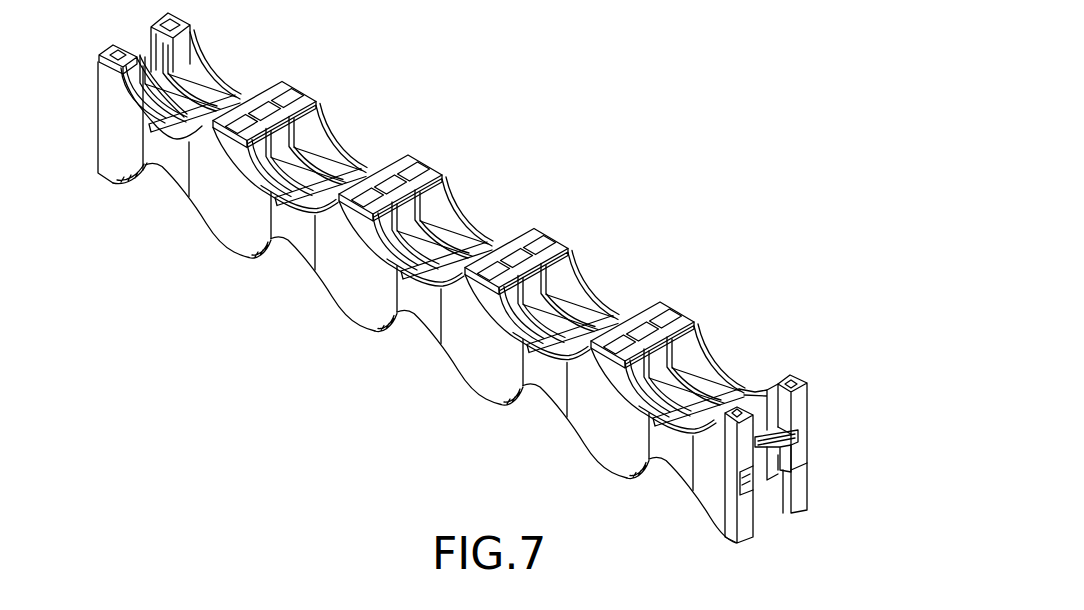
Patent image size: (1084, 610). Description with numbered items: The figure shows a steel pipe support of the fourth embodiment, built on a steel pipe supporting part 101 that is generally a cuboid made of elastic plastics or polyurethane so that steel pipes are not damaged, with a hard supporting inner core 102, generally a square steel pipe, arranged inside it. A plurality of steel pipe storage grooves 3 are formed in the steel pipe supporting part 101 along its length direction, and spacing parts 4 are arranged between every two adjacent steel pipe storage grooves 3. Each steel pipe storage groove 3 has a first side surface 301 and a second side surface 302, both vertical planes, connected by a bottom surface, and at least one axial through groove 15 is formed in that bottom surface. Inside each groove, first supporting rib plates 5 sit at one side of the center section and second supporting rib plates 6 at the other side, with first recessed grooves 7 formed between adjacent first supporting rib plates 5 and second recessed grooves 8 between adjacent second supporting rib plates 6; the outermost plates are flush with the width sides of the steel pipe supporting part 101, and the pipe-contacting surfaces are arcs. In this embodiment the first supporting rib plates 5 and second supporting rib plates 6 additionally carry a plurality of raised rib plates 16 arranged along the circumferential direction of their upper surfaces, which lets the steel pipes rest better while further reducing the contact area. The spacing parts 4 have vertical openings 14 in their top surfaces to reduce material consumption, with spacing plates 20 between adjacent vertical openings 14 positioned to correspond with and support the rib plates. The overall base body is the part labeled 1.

The base 1 is at (237, 228).
The steel pipe storage groove 3 is at (610, 264).
The spacing part 4 is at (532, 229).
The first supporting rib plate 5 is at (350, 107).
The second supporting rib plate 6 is at (362, 143).
The first recessed groove 7 is at (705, 346).
The second recessed groove 8 is at (755, 395).
The vertical opening 14 is at (221, 178).
The axial through groove 15 is at (433, 310).
The raised rib plate 16 is at (481, 195).
The spacing plate 20 is at (265, 79).
The steel pipe supporting part 101 is at (795, 485).
The supporting inner core 102 is at (785, 442).
The first side surface 301 is at (486, 345).
The second side surface 302 is at (502, 371).